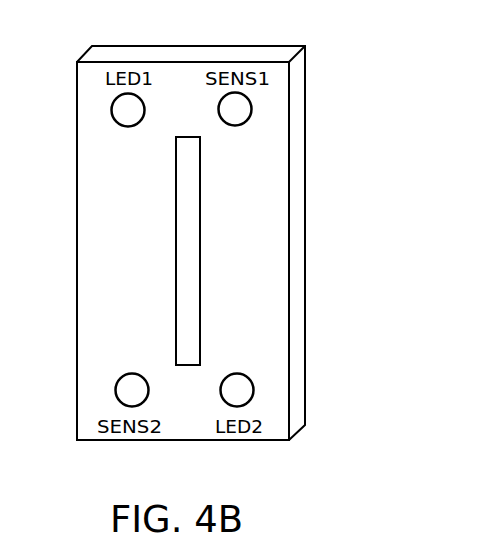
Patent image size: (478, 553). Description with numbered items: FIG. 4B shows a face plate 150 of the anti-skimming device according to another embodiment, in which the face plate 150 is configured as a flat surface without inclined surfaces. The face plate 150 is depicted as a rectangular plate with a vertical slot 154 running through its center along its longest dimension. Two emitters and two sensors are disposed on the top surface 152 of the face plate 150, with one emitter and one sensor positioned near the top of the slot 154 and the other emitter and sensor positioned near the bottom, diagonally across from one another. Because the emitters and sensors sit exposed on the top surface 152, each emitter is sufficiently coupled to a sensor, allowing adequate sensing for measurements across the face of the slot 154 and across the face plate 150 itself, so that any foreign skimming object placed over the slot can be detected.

The face plate 150 is at (306, 106).
The top surface 152 is at (243, 265).
The slot 154 is at (176, 263).